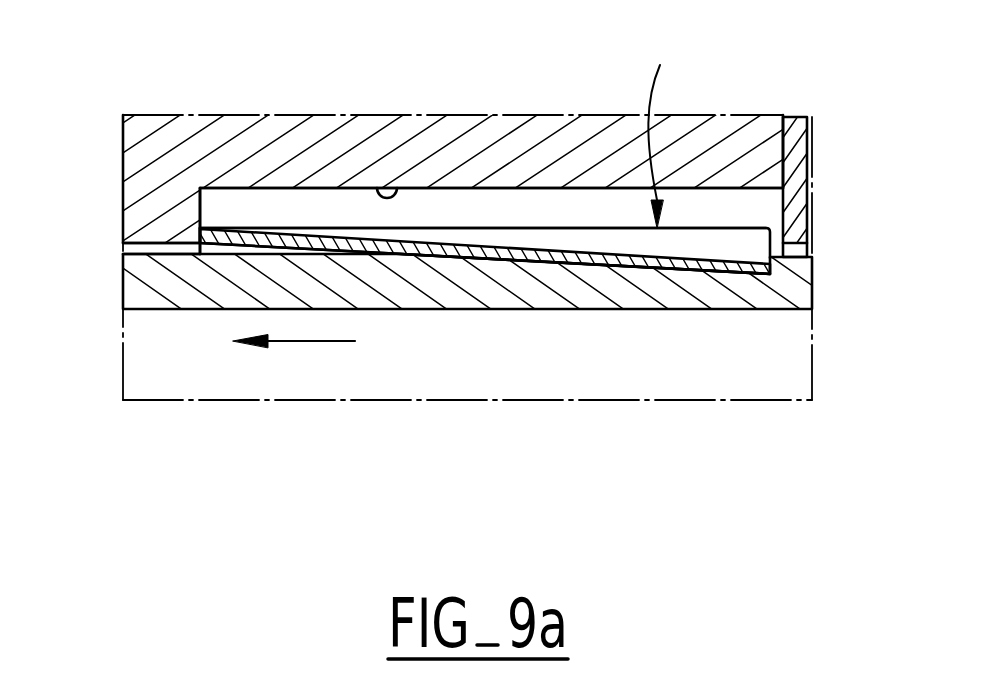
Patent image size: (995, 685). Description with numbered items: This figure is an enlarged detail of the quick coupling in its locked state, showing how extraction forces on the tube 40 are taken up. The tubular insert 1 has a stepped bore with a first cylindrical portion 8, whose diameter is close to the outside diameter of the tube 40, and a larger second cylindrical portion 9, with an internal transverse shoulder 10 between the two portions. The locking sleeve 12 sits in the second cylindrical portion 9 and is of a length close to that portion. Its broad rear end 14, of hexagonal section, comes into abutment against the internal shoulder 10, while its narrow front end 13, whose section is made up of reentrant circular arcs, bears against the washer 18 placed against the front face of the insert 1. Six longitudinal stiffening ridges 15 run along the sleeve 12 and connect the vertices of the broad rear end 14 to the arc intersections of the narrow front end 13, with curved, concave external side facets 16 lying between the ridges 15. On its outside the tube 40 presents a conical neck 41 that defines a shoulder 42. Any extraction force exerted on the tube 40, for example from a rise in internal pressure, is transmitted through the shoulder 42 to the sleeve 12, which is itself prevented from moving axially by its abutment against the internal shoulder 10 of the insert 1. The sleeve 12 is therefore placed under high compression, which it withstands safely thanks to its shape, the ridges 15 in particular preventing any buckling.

The tubular insert 1 is at (332, 136).
The first cylindrical portion 8 is at (156, 243).
The second cylindrical portion 9 is at (401, 189).
The internal transverse shoulder 10 is at (207, 201).
The locking sleeve 12 is at (671, 122).
The narrow front end 13 is at (776, 237).
The broad rear end 14 is at (198, 236).
The longitudinal stiffening ridges 15 is at (513, 228).
The external side facets 16 is at (587, 237).
The washer 18 is at (800, 151).
The tube 40 is at (537, 292).
The neck 41 is at (703, 262).
The shoulder 42 is at (752, 274).